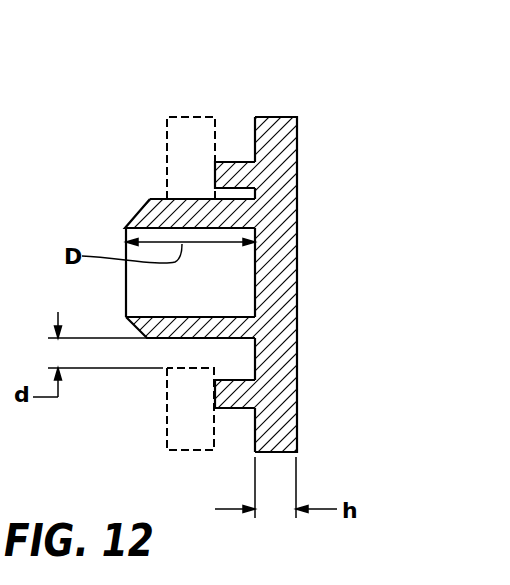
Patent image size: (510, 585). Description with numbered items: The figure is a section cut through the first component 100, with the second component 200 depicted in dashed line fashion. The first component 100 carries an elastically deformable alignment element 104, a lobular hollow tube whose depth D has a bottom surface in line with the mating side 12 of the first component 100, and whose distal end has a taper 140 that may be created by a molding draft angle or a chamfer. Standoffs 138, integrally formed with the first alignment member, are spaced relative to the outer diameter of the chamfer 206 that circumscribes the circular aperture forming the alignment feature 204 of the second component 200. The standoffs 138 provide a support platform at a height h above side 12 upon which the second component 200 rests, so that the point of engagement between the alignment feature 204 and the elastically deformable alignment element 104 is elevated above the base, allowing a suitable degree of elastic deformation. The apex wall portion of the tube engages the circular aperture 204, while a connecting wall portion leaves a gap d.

The first component 100 is at (282, 108).
The mating side of the first alignment member 12 is at (243, 269).
The standoffs 138 is at (245, 162).
The chamfer 206 is at (214, 189).
The elastically deformable alignment element 104 is at (140, 193).
The alignment feature 204 is at (153, 187).
The taper 140 is at (137, 334).
The second component 200 is at (190, 108).